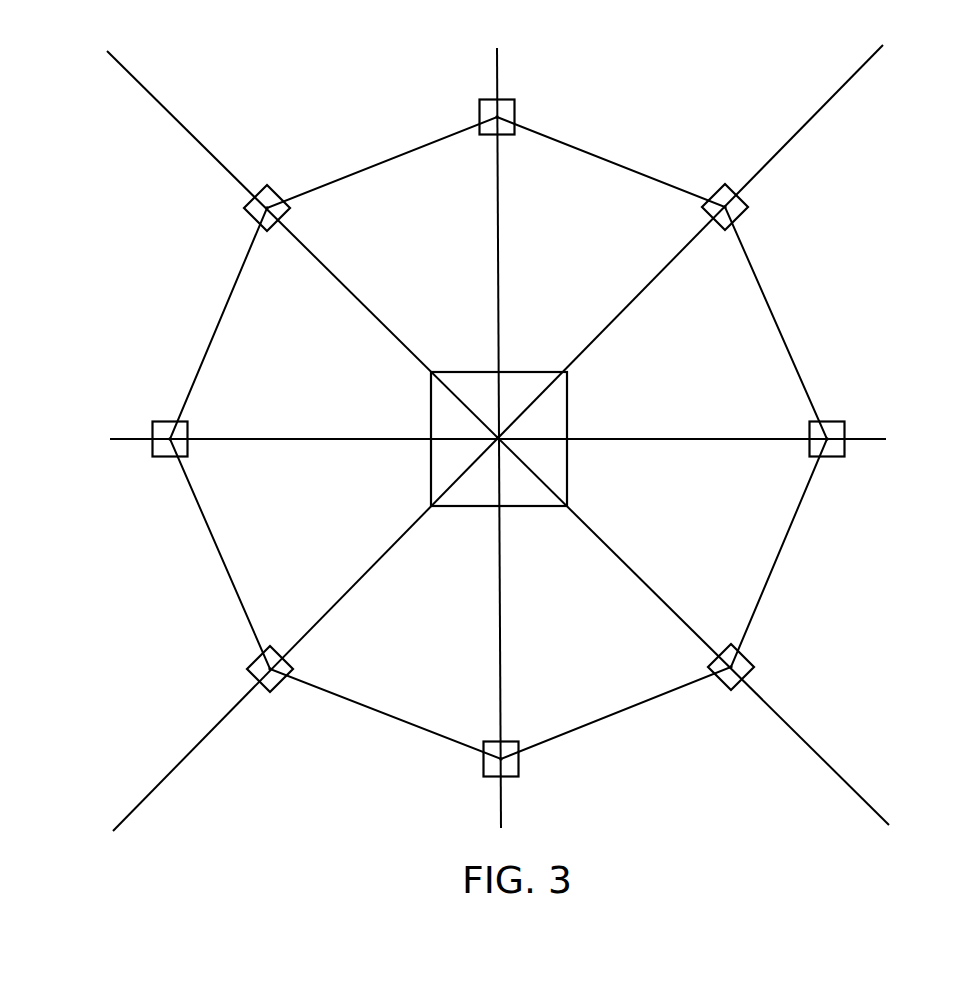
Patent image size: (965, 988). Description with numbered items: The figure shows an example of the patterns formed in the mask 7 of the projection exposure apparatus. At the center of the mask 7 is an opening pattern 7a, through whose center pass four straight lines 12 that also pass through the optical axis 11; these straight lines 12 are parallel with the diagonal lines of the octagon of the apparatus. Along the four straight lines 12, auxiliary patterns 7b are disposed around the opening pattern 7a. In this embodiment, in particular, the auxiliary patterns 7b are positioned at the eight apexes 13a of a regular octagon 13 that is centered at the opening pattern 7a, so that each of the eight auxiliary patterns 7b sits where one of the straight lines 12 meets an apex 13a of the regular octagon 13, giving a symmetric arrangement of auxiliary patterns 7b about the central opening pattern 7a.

The mask 7 is at (243, 755).
The opening pattern 7a is at (567, 398).
The auxiliary patterns 7b is at (270, 190).
The optical axis 11 is at (496, 436).
The straight lines 12 is at (170, 112).
The regular octagon 13 is at (770, 302).
The apexes 13a is at (260, 210).